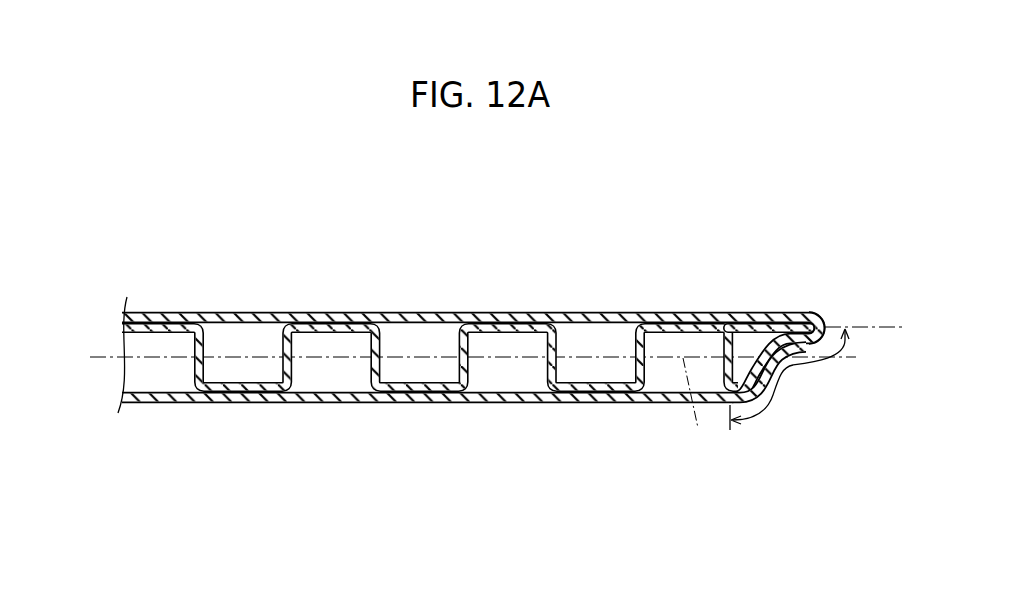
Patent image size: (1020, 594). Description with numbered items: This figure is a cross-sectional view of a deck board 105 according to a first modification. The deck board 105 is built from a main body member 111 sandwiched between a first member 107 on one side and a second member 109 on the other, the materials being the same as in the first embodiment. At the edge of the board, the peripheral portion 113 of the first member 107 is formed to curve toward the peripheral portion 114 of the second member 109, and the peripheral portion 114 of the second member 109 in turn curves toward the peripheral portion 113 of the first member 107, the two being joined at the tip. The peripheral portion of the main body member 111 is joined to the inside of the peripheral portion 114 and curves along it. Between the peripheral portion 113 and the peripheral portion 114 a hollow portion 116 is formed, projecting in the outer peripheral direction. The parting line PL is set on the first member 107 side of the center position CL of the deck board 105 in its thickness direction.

The deck board 105 is at (455, 279).
The first member 107 is at (187, 318).
The second member 109 is at (187, 397).
The main body member 111 is at (200, 373).
The peripheral portion of the first member 113 is at (824, 320).
The peripheral portion of the second member 114 is at (779, 394).
The hollow portion 116 is at (795, 325).